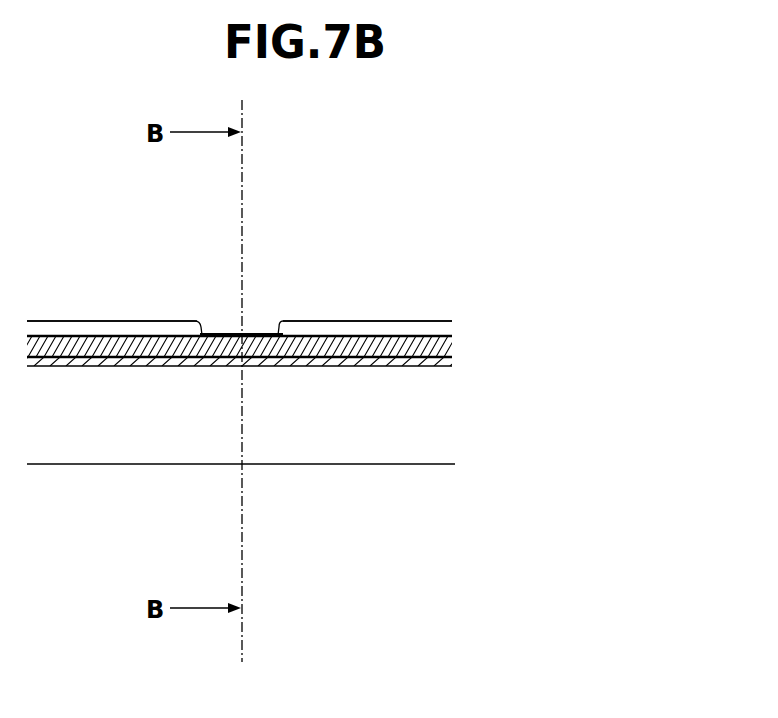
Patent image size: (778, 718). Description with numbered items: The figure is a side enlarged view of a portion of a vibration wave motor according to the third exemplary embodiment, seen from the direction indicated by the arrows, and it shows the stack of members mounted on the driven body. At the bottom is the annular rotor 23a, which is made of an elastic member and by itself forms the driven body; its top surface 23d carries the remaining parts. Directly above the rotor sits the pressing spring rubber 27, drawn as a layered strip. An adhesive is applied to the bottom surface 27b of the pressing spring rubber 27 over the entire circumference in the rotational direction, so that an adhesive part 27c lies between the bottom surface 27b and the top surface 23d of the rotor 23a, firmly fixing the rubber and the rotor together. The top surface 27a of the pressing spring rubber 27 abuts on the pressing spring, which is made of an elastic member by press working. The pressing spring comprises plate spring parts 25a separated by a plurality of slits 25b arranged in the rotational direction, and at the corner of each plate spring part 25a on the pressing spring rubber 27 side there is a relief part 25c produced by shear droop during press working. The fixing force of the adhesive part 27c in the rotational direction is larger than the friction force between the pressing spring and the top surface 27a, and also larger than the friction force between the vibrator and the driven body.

The pressing spring rubber 27 is at (587, 296).
The top surface of the pressing spring rubber 27a is at (455, 322).
The bottom surface of the pressing spring rubber 27b is at (455, 346).
The adhesive part 27c is at (440, 369).
The plate spring parts 25a is at (100, 330).
The slits 25b is at (283, 322).
The relief part 25c is at (245, 338).
The top surface of the rotor 23d is at (345, 368).
The rotor 23a is at (410, 444).